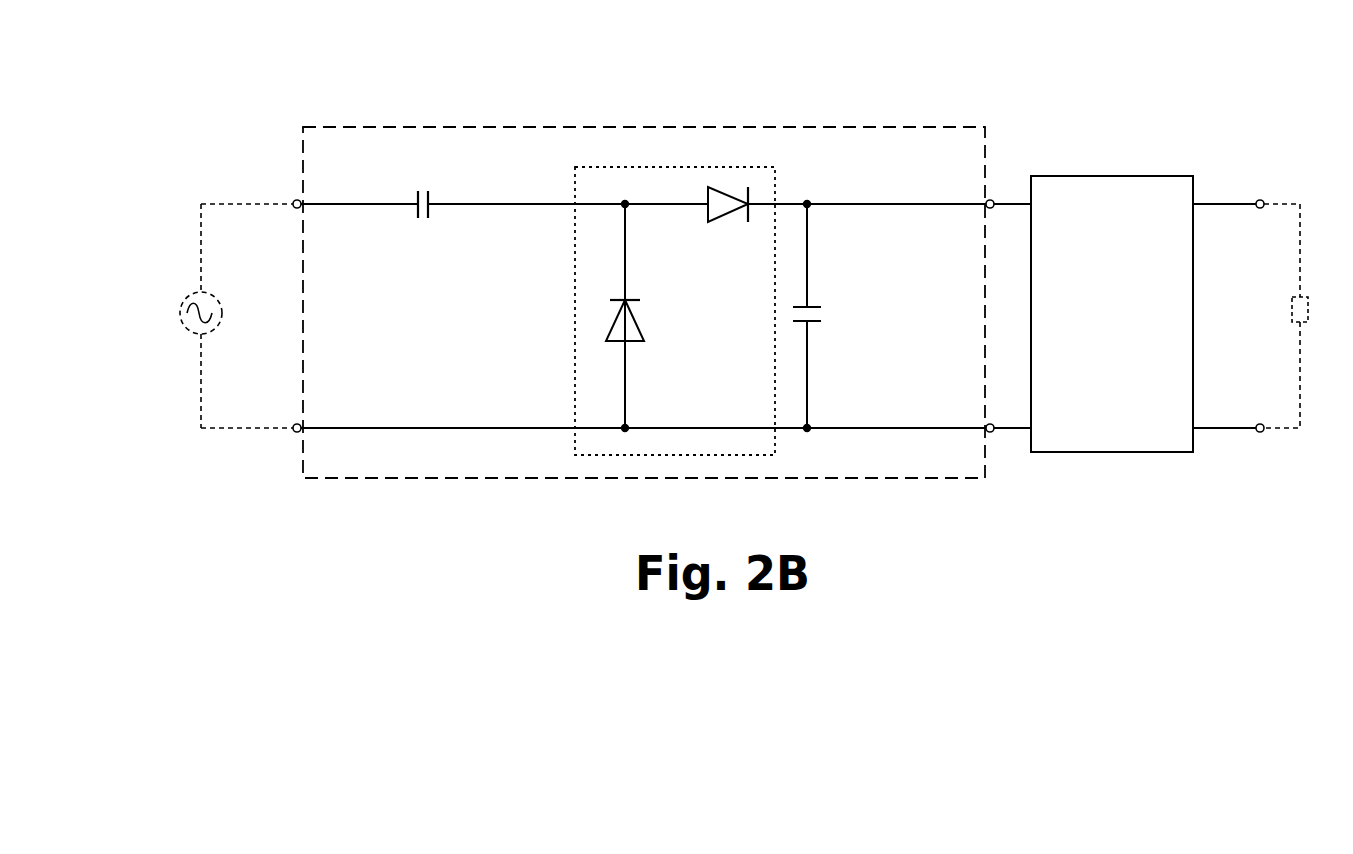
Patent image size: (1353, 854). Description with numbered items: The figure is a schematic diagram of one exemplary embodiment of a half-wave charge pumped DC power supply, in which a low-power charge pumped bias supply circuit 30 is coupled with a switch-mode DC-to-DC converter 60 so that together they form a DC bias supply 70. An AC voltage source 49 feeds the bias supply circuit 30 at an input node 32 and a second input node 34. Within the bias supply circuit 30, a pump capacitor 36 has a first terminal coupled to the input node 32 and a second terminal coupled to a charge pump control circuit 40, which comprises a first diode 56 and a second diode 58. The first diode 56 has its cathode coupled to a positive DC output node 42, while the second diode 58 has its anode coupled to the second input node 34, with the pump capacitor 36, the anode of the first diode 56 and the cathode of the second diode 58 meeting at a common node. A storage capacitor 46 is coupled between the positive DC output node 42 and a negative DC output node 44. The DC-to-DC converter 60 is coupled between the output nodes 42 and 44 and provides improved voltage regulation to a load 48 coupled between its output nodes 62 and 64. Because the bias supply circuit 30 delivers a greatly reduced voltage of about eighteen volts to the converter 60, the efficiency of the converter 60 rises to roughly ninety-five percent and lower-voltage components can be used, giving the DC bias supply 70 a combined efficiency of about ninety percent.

The DC bias supply 70 is at (274, 64).
The low-power charge pumped bias supply circuit 30 is at (876, 121).
The input node 32 is at (296, 201).
The second input node 34 is at (296, 432).
The pump capacitor 36 is at (430, 203).
The charge pump control circuit 40 is at (575, 381).
The positive DC output node 42 is at (993, 201).
The negative DC output node 44 is at (994, 432).
The storage capacitor 46 is at (816, 313).
The load 48 is at (1308, 301).
The AC voltage source 49 is at (180, 317).
The first diode 56 is at (724, 219).
The second diode 58 is at (638, 333).
The switch-mode DC-to-DC converter 60 is at (1115, 172).
The output node 62 is at (1264, 201).
The output node 64 is at (1263, 432).